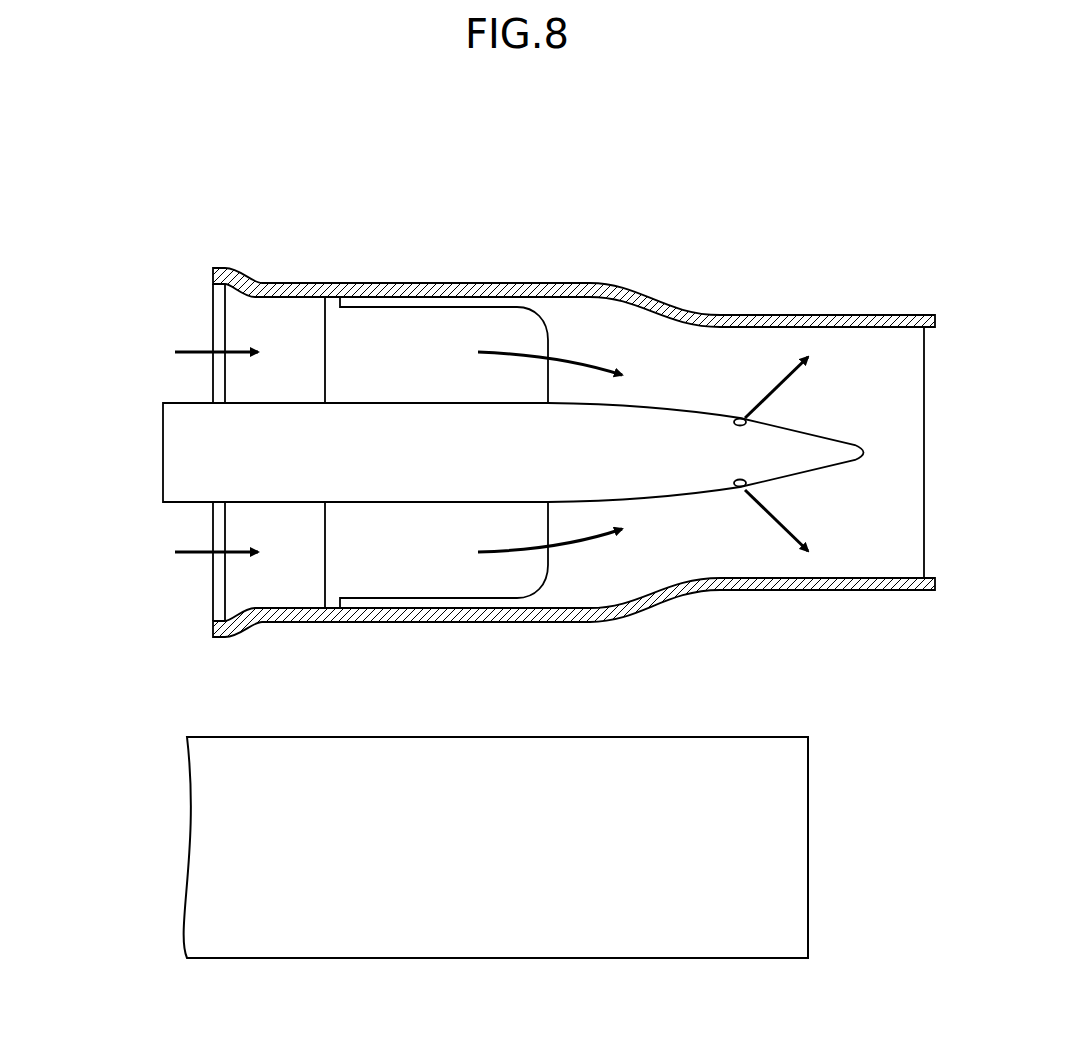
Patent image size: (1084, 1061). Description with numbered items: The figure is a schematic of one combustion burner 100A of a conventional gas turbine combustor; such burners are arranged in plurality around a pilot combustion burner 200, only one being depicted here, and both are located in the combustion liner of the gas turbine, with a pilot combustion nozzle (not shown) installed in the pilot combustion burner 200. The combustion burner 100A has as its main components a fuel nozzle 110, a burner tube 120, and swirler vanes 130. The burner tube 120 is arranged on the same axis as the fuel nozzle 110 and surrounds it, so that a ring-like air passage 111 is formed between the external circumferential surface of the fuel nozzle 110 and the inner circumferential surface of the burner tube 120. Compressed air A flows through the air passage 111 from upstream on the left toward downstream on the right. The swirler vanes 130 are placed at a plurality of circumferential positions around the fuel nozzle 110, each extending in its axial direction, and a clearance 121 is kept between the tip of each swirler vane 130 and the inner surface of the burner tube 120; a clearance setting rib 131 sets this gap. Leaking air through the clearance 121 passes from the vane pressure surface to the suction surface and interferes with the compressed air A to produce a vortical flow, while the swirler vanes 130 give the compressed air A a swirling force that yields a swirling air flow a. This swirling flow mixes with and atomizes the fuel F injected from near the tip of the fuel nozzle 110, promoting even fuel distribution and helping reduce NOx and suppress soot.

The combustion burner 100A is at (438, 145).
The fuel nozzle 110 is at (828, 447).
The air passage 111 is at (688, 340).
The burner tube 120 is at (616, 296).
The clearance 121 is at (523, 305).
The swirler vanes 130 is at (402, 330).
The clearance setting rib 131 is at (333, 298).
The pilot combustion burner 200 is at (561, 944).
The compressed air A is at (190, 350).
The swirling air flow a is at (600, 358).
The fuel F is at (752, 507).